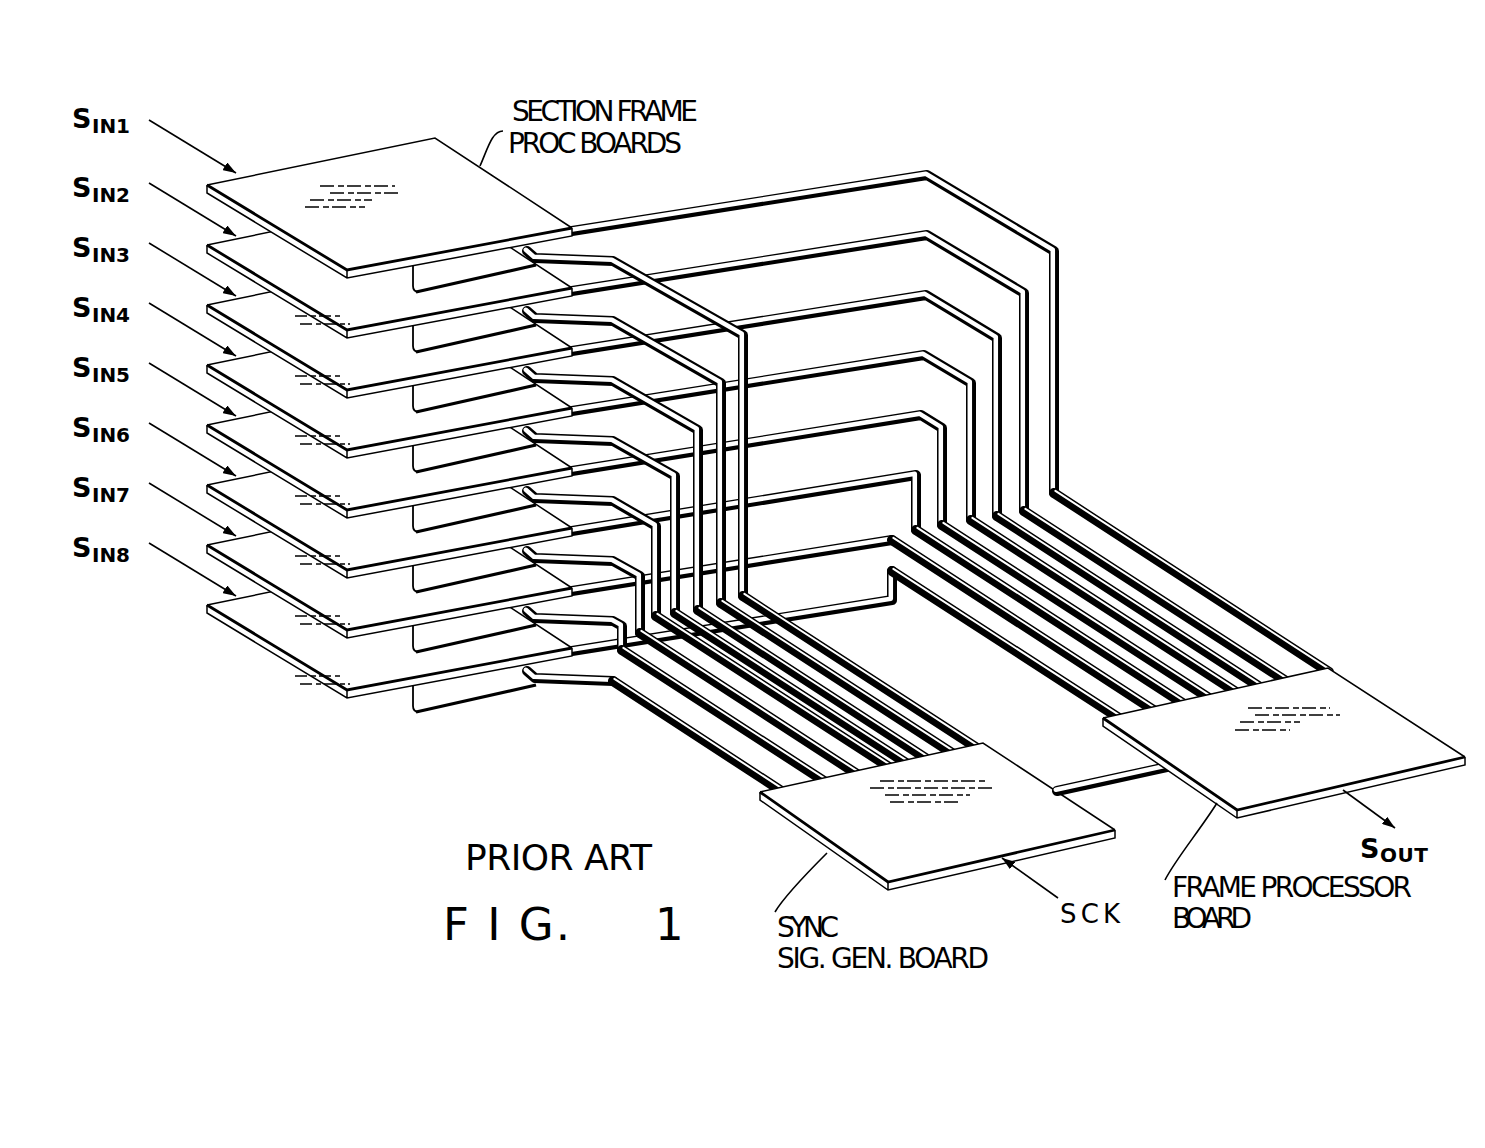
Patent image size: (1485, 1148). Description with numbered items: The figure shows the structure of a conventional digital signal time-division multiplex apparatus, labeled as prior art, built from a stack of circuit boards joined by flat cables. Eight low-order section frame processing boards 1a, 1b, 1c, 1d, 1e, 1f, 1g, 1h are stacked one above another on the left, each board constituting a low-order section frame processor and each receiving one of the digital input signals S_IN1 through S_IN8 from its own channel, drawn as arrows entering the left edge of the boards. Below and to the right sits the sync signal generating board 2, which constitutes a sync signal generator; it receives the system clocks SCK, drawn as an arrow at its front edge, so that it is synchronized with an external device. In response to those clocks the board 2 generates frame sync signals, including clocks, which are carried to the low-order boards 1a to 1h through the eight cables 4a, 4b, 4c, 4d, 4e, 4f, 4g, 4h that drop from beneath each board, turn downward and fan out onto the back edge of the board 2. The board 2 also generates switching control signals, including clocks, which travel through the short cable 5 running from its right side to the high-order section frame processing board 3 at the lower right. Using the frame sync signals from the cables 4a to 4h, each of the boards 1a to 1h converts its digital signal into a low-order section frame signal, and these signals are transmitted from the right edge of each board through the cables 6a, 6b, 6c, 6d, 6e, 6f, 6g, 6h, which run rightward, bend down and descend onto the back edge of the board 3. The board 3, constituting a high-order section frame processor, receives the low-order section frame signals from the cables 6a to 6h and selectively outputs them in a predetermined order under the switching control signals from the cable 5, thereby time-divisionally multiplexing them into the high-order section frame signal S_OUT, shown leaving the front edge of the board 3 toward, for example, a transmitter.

The low-order section frame processing board 1a is at (218, 200).
The low-order section frame processing board 1b is at (218, 260).
The low-order section frame processing board 1c is at (218, 320).
The low-order section frame processing board 1d is at (218, 380).
The low-order section frame processing board 1e is at (218, 440).
The low-order section frame processing board 1f is at (218, 500).
The low-order section frame processing board 1g is at (218, 560).
The low-order section frame processing board 1h is at (232, 622).
The sync signal generating board 2 is at (810, 836).
The high-order section frame processing board 3 is at (1410, 722).
The cable 4a is at (607, 254).
The cable 4b is at (607, 314).
The cable 4c is at (607, 374).
The cable 4d is at (607, 434).
The cable 4e is at (607, 494).
The cable 4f is at (607, 554).
The cable 4g is at (607, 614).
The cable 4h is at (606, 684).
The cable 5 is at (1130, 777).
The cable 6a is at (868, 188).
The cable 6b is at (868, 248).
The cable 6c is at (868, 308).
The cable 6d is at (868, 368).
The cable 6e is at (868, 428).
The cable 6f is at (868, 488).
The cable 6g is at (868, 548).
The cable 6h is at (872, 606).